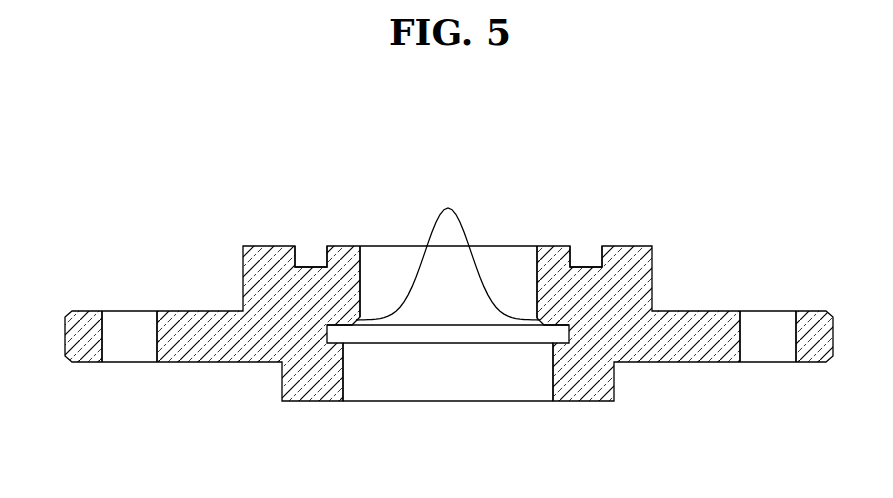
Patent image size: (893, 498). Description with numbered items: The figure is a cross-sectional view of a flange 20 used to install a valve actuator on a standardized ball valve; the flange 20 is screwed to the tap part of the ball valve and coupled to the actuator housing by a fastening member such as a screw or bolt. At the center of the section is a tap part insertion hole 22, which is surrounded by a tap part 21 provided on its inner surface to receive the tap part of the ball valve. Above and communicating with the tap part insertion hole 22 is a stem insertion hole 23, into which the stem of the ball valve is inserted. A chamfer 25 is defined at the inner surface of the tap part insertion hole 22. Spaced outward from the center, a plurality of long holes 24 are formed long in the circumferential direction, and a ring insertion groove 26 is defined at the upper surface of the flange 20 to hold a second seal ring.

The flange 20 is at (697, 193).
The tap part 21 is at (552, 378).
The tap part insertion hole 22 is at (349, 368).
The stem insertion hole 23 is at (365, 278).
The long holes 24 is at (131, 325).
The chamfer 25 is at (448, 252).
The ring insertion groove 26 is at (309, 251).